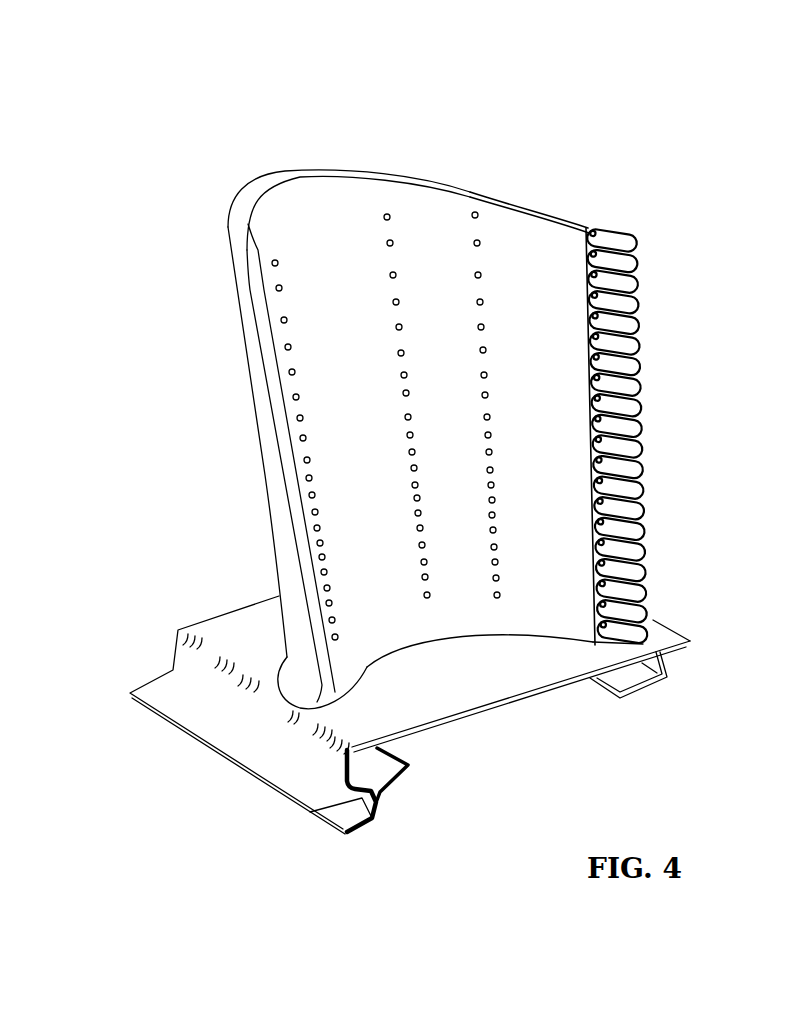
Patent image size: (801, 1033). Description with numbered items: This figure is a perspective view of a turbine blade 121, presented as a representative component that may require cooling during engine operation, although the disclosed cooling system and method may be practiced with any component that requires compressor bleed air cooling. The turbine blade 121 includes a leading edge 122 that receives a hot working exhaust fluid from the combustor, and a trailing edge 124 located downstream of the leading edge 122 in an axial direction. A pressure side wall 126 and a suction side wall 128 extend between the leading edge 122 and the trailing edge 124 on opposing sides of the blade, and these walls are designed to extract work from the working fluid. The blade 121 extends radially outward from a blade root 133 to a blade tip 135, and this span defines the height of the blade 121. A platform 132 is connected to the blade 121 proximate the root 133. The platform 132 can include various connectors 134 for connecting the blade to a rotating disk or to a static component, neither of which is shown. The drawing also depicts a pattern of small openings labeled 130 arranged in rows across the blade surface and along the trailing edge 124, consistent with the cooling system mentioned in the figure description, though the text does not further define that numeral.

The turbine blade 121 is at (672, 209).
The leading edge 122 is at (263, 314).
The trailing edge 124 is at (640, 365).
The pressure side wall 126 is at (313, 215).
The suction side wall 128 is at (251, 184).
The cooling holes 130 is at (387, 217).
The platform 132 is at (460, 682).
The blade root 133 is at (377, 668).
The connectors 134 is at (365, 827).
The blade tip 135 is at (286, 184).